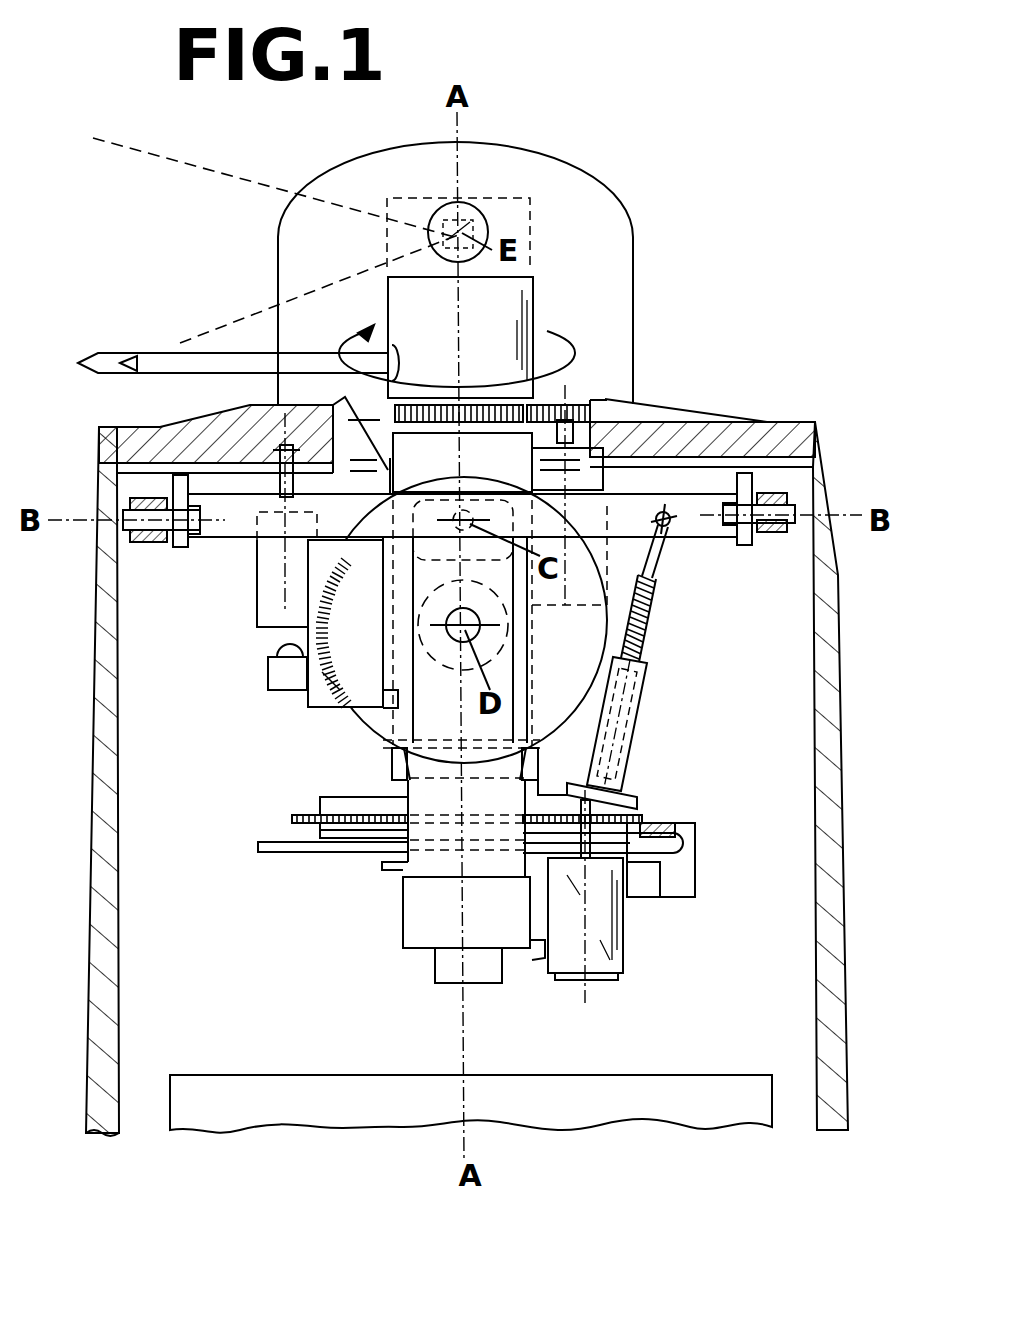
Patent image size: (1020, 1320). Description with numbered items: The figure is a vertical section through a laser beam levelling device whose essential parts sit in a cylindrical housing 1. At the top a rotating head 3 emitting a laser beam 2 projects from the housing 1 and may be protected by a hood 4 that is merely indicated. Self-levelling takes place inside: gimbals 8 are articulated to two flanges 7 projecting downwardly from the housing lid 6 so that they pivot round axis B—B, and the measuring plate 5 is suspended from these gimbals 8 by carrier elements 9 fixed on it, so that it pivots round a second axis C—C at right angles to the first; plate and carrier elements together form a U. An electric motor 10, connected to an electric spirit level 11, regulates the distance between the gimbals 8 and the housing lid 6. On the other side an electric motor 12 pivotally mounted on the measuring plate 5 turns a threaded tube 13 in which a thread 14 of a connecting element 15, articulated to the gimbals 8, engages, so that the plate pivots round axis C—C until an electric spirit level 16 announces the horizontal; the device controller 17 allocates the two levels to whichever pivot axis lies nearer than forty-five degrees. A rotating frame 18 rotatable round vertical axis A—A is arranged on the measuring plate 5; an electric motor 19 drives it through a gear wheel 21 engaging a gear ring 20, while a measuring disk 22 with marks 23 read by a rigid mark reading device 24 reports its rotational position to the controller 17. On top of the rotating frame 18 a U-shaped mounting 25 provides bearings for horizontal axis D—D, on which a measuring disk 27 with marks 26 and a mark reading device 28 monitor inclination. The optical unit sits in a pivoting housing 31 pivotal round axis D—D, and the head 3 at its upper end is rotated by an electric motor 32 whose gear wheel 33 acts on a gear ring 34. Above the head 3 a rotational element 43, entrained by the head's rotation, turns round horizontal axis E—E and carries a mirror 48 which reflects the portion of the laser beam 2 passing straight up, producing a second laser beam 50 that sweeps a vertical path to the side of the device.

The housing 1 is at (832, 655).
The laser beam 2 is at (86, 365).
The rotating head 3 is at (572, 265).
The hood 4 is at (635, 300).
The measuring plate 5 is at (383, 870).
The housing lid 6 is at (123, 441).
The flanges 7 is at (178, 490).
The gimbals 8 is at (459, 550).
The carrier elements 9 is at (422, 708).
The electric motor 10 is at (258, 566).
The electric spirit level 11 is at (285, 676).
The electric motor 12 is at (633, 795).
The threaded tube 13 is at (635, 725).
The thread 14 is at (645, 630).
The connecting element 15 is at (657, 565).
The electric spirit level 16 is at (392, 767).
The device controller 17 is at (322, 1090).
The rotating frame 18 is at (340, 832).
The electric motor 19 is at (602, 962).
The gear ring 20 is at (310, 826).
The gear wheel 21 is at (630, 855).
The measuring disk 22 is at (626, 856).
The marks 23 is at (624, 848).
The mark reading device 24 is at (648, 883).
The U-shaped mounting 25 is at (524, 676).
The marks 26 is at (330, 656).
The measuring disk 27 is at (333, 676).
The mark reading device 28 is at (315, 612).
The pivoting housing 31 is at (283, 398).
The electric motor 32 is at (583, 598).
The gear wheel 33 is at (542, 423).
The gear ring 34 is at (437, 423).
The rotational element 43 is at (484, 216).
The mirror 48 is at (422, 190).
The laser beam 50 is at (200, 167).